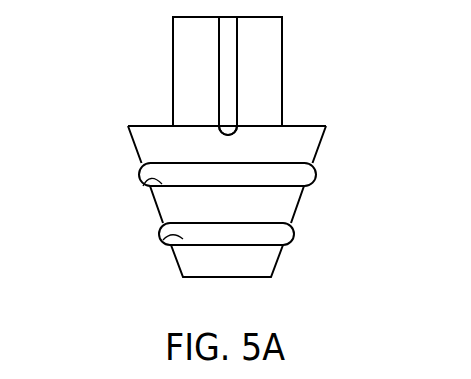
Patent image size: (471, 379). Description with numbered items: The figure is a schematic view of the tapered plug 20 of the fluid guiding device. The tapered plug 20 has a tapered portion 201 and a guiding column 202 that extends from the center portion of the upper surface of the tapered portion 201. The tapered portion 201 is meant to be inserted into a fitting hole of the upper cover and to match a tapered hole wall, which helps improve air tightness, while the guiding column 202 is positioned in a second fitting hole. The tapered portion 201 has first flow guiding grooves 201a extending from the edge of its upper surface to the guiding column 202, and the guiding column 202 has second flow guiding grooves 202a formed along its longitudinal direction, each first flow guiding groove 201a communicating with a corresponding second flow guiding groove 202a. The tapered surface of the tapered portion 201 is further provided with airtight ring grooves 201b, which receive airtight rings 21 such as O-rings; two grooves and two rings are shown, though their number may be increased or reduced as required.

The tapered plug 20 is at (209, 145).
The guiding column 202 is at (227, 74).
The second flow guiding grooves 202a is at (226, 34).
The tapered portion 201 is at (233, 168).
The first flow guiding grooves 201a is at (228, 128).
The airtight rings 21 is at (303, 173).
The airtight ring grooves 201b is at (143, 186).